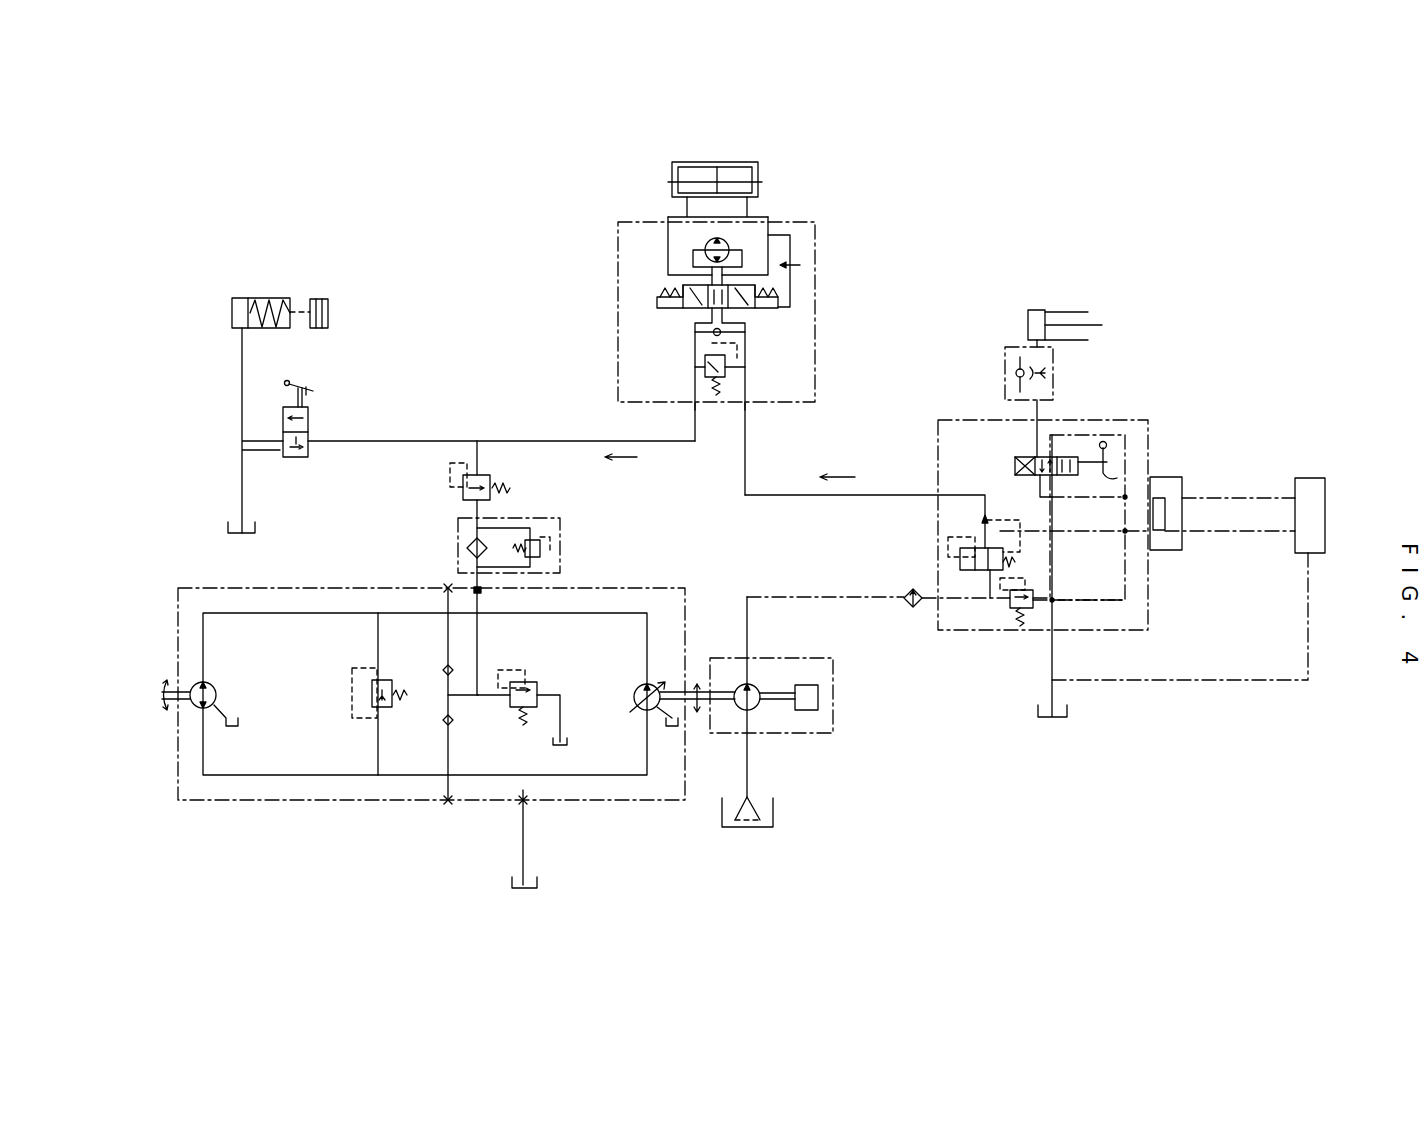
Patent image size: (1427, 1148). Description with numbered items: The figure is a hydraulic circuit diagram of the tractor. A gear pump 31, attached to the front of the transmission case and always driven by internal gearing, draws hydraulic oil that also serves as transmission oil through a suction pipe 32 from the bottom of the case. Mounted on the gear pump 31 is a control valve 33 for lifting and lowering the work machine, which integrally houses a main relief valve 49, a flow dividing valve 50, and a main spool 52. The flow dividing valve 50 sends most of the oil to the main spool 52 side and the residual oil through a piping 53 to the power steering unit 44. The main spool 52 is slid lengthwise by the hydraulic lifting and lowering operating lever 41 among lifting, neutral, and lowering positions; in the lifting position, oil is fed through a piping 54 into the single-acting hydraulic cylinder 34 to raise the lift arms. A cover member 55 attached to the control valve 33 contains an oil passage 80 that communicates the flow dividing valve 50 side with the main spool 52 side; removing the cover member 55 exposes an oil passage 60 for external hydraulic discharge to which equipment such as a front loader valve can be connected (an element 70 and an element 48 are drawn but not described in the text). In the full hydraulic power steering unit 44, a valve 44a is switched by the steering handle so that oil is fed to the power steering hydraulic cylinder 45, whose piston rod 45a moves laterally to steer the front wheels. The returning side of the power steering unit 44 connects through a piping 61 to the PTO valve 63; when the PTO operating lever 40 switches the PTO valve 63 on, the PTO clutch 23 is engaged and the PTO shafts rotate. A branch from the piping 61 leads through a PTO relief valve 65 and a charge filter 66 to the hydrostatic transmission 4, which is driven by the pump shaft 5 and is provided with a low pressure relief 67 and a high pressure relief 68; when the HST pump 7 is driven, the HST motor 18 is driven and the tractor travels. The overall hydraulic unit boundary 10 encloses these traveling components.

The hydrostatic transmission (HST) 4 is at (471, 814).
The pump shaft 5 is at (673, 685).
The HST pump 7 is at (637, 686).
The hydraulic unit 10 is at (178, 710).
The HST motor 18 is at (215, 683).
The PTO clutch 23 is at (278, 297).
The gear pump 31 is at (753, 710).
The suction pipe 32 is at (750, 765).
The control valve 33 is at (1152, 414).
The hydraulic cylinder 34 is at (1028, 318).
The PTO operating lever 40 is at (303, 387).
The hydraulic lifting and lowering operating lever 41 is at (1127, 453).
The power steering unit 44 is at (817, 283).
The valve 44a is at (768, 313).
The power steering hydraulic cylinder 45 is at (745, 162).
The piston rod 45a is at (672, 187).
The brake actuator 48 is at (1327, 520).
The main relief valve 49 is at (1008, 608).
The flow dividing valve 50 is at (960, 565).
The main spool 52 is at (1012, 462).
The piping 53 is at (817, 497).
The piping 54 is at (1043, 415).
The cover member 55 is at (1182, 522).
The oil passage for external hydraulic discharge 60 is at (1150, 537).
The piping 61 is at (420, 440).
The PTO valve 63 is at (315, 422).
The PTO relief valve 65 is at (493, 477).
The charge filter 66 is at (458, 555).
The low pressure relief 67 is at (537, 682).
The high pressure relief 68 is at (392, 680).
The line 70 is at (1113, 480).
The oil passage 80 is at (1187, 495).